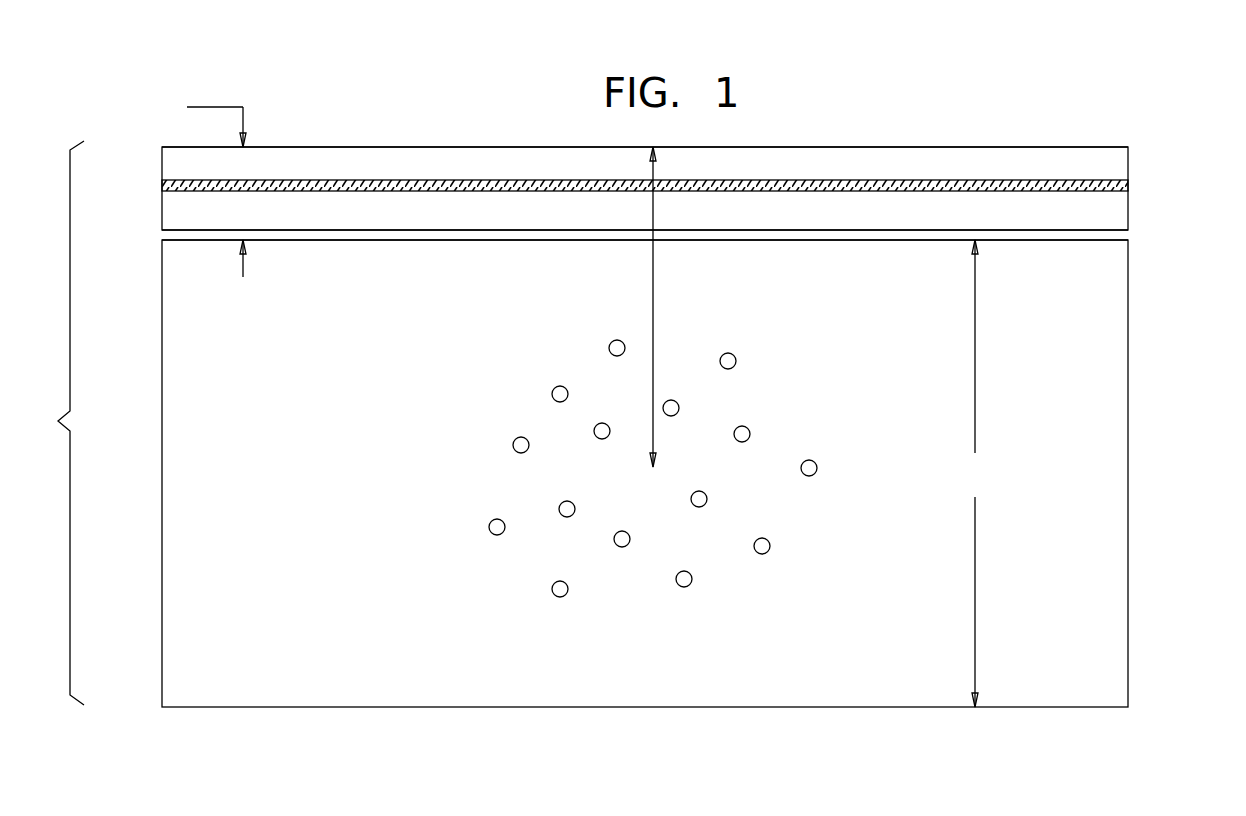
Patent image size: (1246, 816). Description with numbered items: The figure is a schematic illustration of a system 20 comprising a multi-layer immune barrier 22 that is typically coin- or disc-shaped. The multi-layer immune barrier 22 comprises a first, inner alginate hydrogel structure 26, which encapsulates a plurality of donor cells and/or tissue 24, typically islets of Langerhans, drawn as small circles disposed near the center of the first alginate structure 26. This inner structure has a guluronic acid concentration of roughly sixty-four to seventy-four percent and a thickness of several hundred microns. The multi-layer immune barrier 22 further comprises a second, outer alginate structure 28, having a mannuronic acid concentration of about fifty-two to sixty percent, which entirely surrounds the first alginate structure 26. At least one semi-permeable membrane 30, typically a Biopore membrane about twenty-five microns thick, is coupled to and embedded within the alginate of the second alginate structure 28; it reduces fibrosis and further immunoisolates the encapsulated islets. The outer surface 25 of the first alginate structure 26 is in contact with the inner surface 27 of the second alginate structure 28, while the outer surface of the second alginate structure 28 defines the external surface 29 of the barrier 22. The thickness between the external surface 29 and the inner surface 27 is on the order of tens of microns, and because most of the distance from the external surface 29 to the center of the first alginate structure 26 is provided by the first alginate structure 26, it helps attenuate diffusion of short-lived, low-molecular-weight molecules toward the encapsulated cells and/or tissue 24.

The system 20 is at (1135, 114).
The multi-layer immune barrier 22 is at (51, 423).
The donor cells and/or tissue 24 is at (678, 590).
The outer surface of first alginate structure 25 is at (426, 241).
The first inner alginate structure 26 is at (396, 445).
The inner surface of second alginate structure 27 is at (1042, 224).
The second outer alginate structure 28 is at (735, 174).
The external surface of multi-layer immune barrier 29 is at (940, 147).
The semi-permeable membrane 30 is at (1008, 181).